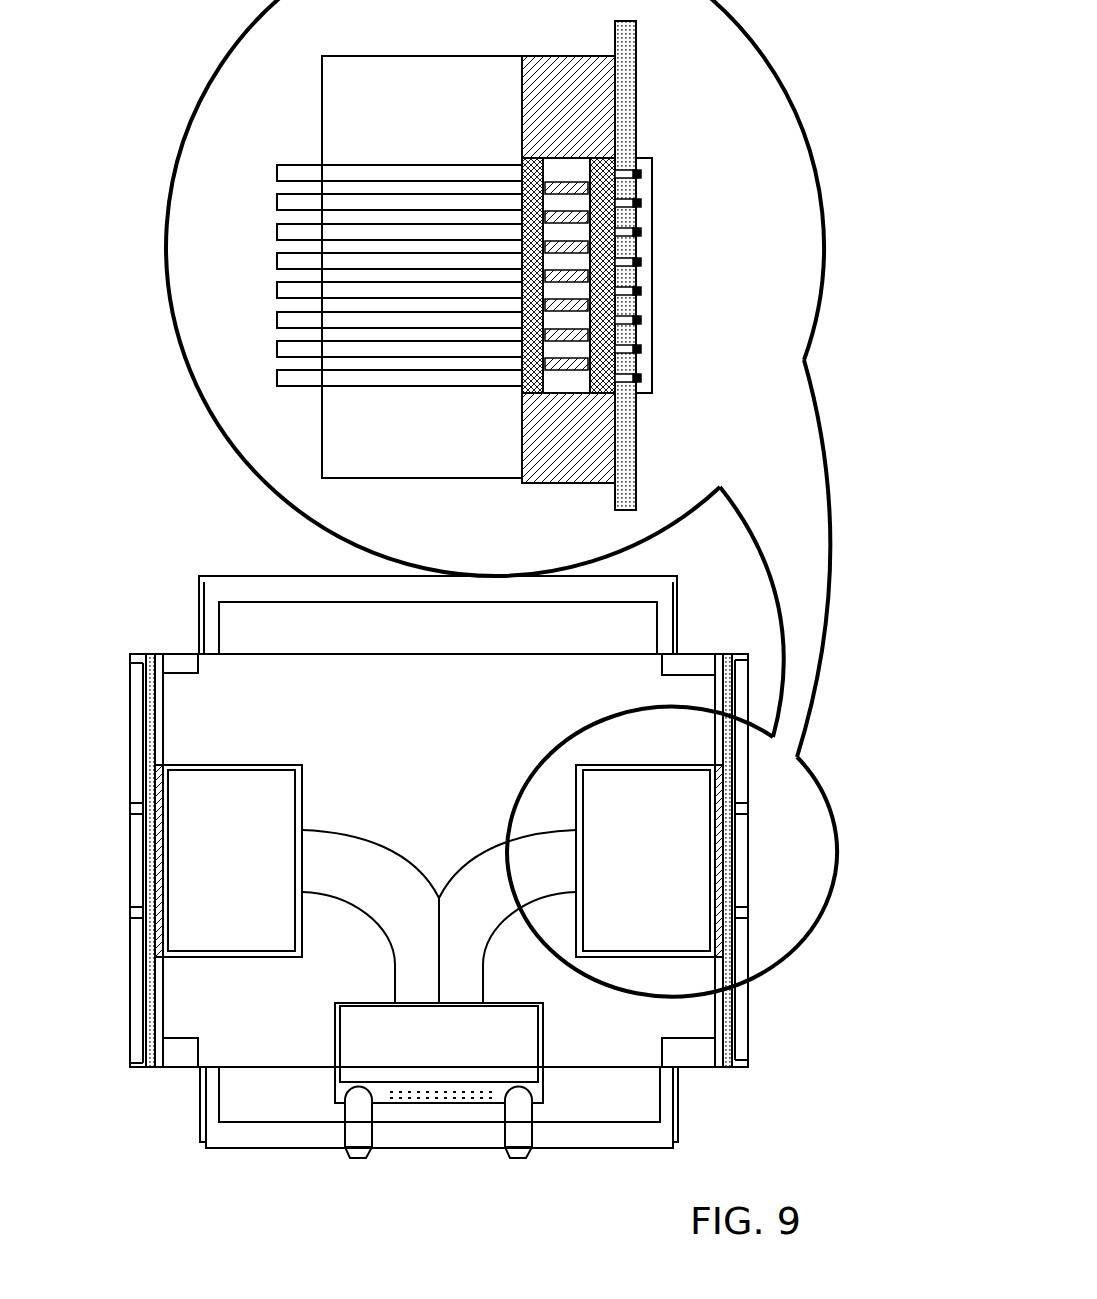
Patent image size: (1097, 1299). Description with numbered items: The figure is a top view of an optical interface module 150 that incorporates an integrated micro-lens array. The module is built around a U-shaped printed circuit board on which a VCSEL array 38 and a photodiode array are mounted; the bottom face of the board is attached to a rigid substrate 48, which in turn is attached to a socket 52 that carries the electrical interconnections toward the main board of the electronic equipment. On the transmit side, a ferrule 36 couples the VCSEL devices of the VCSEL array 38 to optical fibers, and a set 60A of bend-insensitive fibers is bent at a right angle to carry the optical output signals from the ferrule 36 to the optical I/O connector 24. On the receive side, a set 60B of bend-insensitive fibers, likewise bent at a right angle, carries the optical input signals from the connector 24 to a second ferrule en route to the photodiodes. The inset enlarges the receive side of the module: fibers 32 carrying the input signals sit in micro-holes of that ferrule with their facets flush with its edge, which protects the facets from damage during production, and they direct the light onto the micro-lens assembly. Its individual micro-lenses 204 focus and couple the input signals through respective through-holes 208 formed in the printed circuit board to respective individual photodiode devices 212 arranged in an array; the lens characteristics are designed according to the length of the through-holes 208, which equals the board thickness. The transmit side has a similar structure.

The optical I/O connector 24 is at (439, 1080).
The fibers 32 is at (277, 202).
The ferrule 36 is at (173, 893).
The VCSEL array 38 is at (137, 862).
The rigid substrate 48 is at (268, 1150).
The socket 52 is at (200, 1118).
The set of BI fibers 60A is at (392, 848).
The set of BI fibers 60B is at (492, 848).
The optical interface module 150 is at (119, 594).
The micro-lenses 204 is at (572, 200).
The through-holes 208 is at (645, 349).
The photodiode devices 212 is at (645, 174).